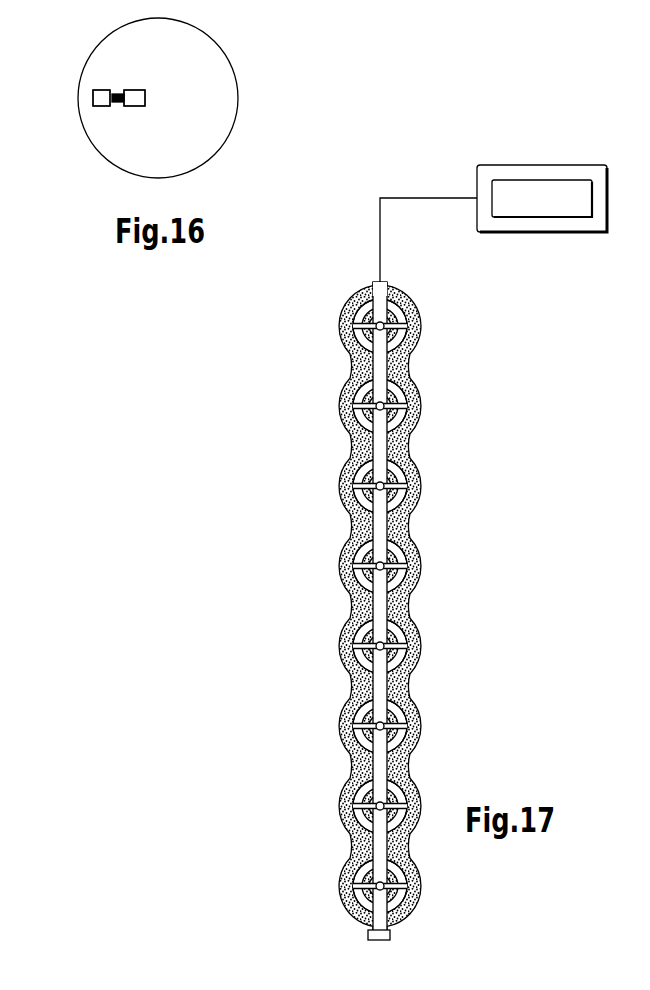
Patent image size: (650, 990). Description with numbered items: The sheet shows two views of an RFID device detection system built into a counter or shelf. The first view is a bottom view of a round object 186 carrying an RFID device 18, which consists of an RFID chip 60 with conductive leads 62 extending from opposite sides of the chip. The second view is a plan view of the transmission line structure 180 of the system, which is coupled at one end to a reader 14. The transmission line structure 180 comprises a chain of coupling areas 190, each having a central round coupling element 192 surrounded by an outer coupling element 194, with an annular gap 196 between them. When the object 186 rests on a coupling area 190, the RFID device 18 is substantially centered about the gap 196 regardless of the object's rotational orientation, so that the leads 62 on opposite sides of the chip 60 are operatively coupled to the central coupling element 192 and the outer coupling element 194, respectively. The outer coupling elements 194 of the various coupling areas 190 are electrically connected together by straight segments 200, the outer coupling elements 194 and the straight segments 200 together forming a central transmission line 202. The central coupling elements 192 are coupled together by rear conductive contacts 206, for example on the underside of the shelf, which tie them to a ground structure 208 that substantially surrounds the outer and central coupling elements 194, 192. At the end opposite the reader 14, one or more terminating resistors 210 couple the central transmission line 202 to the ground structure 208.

In FIG. 17, the reader 14 is at (532, 232).
In FIG. 16, the RFID device 18 is at (80, 100).
In FIG. 16, the RFID chip 60 is at (119, 93).
In FIG. 16, the conductive leads 62 is at (98, 90).
In FIG. 16, the round object 186 is at (96, 150).
In FIG. 17, the transmission line structure 180 is at (336, 275).
In FIG. 17, the coupling areas 190 is at (328, 426).
In FIG. 17, the central round coupling element 192 is at (383, 403).
In FIG. 17, the outer coupling element 194 is at (401, 392).
In FIG. 17, the annular gap 196 is at (389, 414).
In FIG. 17, the straight segments 200 is at (384, 523).
In FIG. 17, the central transmission line 202 is at (400, 596).
In FIG. 17, the rear conductive contacts 206 is at (405, 667).
In FIG. 17, the ground structure 208 is at (328, 747).
In FIG. 17, the terminating resistors 210 is at (389, 941).